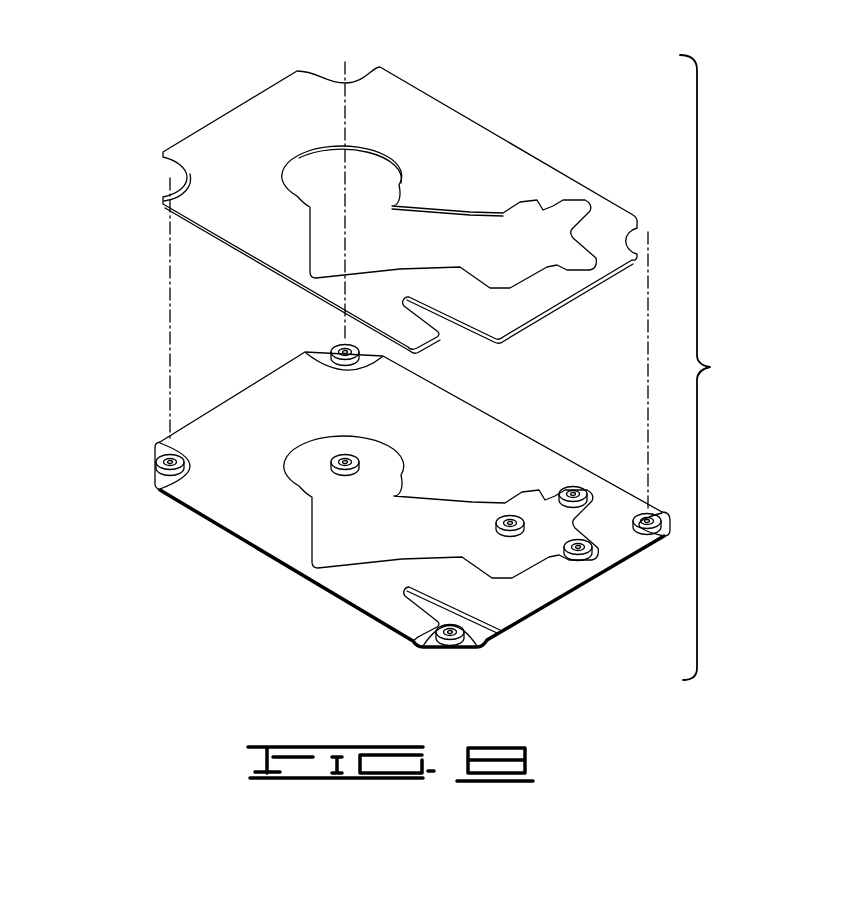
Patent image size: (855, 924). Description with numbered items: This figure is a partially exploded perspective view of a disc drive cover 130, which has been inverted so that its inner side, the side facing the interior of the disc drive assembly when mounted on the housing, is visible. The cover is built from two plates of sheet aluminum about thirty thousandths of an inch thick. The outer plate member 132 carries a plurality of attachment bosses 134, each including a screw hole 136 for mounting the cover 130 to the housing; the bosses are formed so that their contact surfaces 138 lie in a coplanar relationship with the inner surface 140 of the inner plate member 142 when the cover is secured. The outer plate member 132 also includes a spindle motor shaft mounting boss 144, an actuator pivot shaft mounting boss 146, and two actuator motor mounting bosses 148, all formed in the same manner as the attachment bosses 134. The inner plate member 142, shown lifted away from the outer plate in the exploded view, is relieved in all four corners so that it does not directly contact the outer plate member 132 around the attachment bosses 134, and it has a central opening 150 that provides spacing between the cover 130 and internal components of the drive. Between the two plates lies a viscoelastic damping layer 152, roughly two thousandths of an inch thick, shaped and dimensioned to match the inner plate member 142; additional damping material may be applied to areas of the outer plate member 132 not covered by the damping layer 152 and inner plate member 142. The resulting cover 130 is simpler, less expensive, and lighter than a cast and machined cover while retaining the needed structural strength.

The cover 130 is at (802, 365).
The outer plate member 132 is at (480, 635).
The attachment bosses 134 is at (337, 344).
The screw holes 136 is at (451, 641).
The contact surfaces 138 is at (423, 641).
The inner surface 140 is at (483, 145).
The inner plate member 142 is at (533, 152).
The spindle motor shaft mounting boss 144 is at (337, 477).
The actuator pivot shaft mounting boss 146 is at (496, 527).
The actuator motor mounting bosses 148 is at (587, 536).
The central opening 150 is at (371, 177).
The viscoelastic damping layer 152 is at (504, 443).